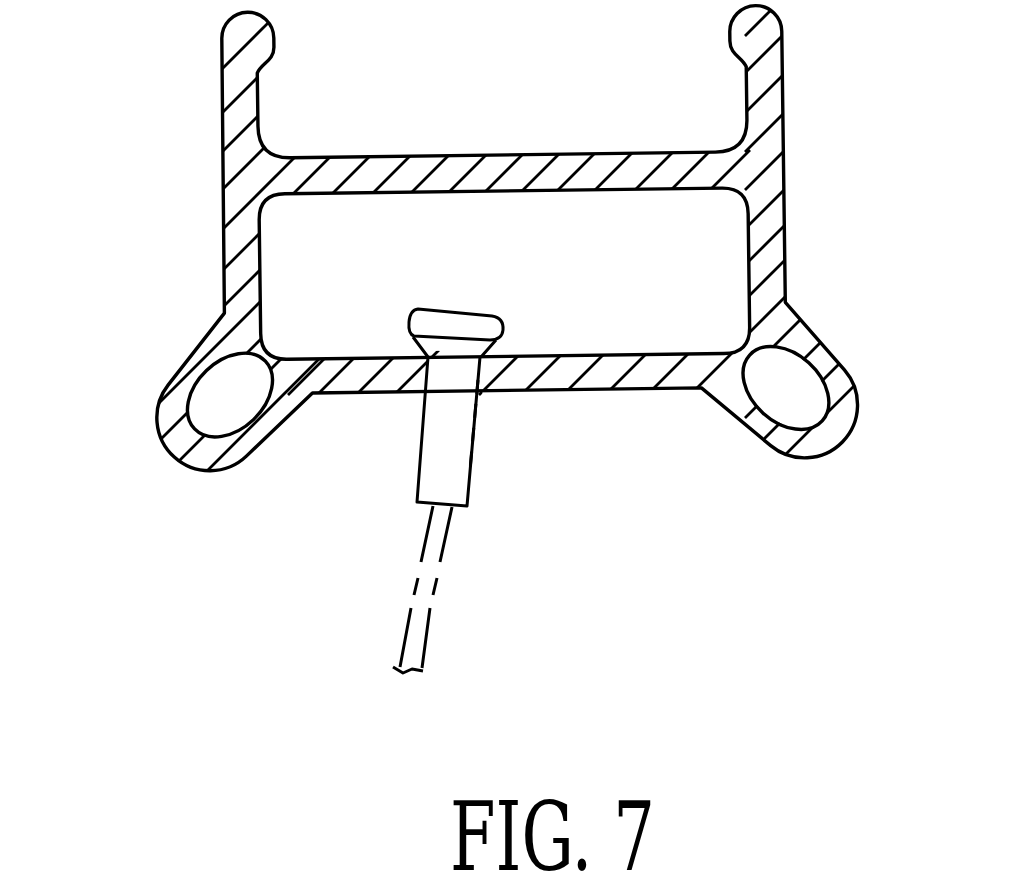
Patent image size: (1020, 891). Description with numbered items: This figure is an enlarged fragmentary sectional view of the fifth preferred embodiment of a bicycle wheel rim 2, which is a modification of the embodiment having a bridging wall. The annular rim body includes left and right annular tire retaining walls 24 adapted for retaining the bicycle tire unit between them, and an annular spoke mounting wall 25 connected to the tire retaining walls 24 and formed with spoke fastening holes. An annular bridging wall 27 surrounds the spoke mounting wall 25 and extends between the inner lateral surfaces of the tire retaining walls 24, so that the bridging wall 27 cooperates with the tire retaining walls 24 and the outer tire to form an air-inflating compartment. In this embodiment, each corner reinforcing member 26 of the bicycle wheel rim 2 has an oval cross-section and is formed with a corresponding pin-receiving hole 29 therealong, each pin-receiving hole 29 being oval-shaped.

The bicycle wheel rim 2 is at (155, 357).
The tire retaining wall 24 is at (258, 179).
The spoke mounting wall 25 is at (562, 367).
The corner reinforcing member 26 is at (228, 443).
The bridging wall 27 is at (561, 162).
The pin-receiving hole 29 is at (230, 397).